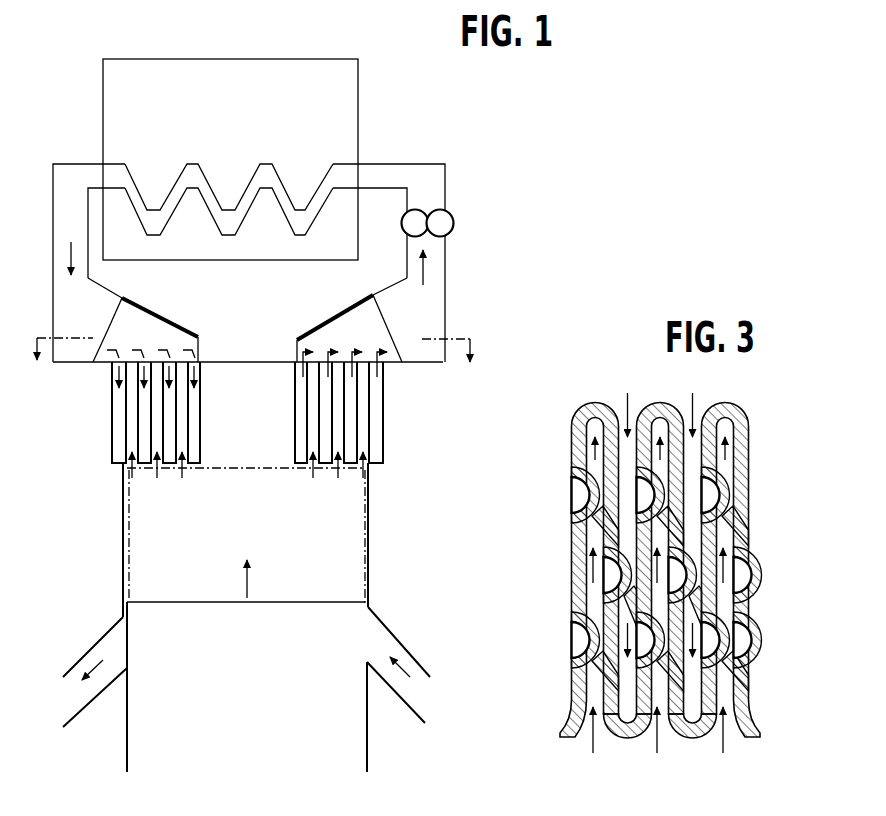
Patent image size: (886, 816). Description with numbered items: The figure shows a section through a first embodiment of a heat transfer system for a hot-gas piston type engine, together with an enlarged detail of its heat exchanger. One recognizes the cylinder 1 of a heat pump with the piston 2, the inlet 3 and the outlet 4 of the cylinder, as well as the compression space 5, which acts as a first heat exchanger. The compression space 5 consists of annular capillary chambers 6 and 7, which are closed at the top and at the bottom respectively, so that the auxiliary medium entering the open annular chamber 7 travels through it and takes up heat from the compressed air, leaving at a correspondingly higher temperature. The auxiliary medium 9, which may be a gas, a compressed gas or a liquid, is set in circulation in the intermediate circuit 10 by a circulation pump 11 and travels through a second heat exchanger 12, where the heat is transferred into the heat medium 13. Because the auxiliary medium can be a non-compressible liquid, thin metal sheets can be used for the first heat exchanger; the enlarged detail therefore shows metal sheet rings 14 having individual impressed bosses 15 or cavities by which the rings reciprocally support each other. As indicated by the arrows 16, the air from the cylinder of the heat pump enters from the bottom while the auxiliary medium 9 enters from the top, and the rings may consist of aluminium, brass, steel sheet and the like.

In FIG. 1, the cylinder 1 is at (389, 597).
In FIG. 1, the piston 2 is at (310, 615).
In FIG. 1, the inlet 3 is at (403, 695).
In FIG. 1, the outlet 4 is at (75, 703).
In FIG. 1, the compression space 5 is at (397, 416).
In FIG. 1, the annular capillary chambers 6 is at (135, 420).
In FIG. 3, the annular capillary chambers 6 is at (597, 683).
In FIG. 1, the annular capillary chambers 7 is at (335, 438).
In FIG. 3, the annular capillary chambers 7 is at (627, 520).
In FIG. 1, the auxiliary medium 9 is at (430, 308).
In FIG. 1, the intermediate circuit 10 is at (461, 189).
In FIG. 1, the circulation pump 11 is at (448, 226).
In FIG. 1, the second heat exchanger 12 is at (272, 166).
In FIG. 1, the heat medium 13 is at (345, 95).
In FIG. 3, the metal sheet rings 14 is at (710, 543).
In FIG. 3, the impressed bosses 15 is at (728, 632).
In FIG. 3, the arrows 16 is at (657, 745).